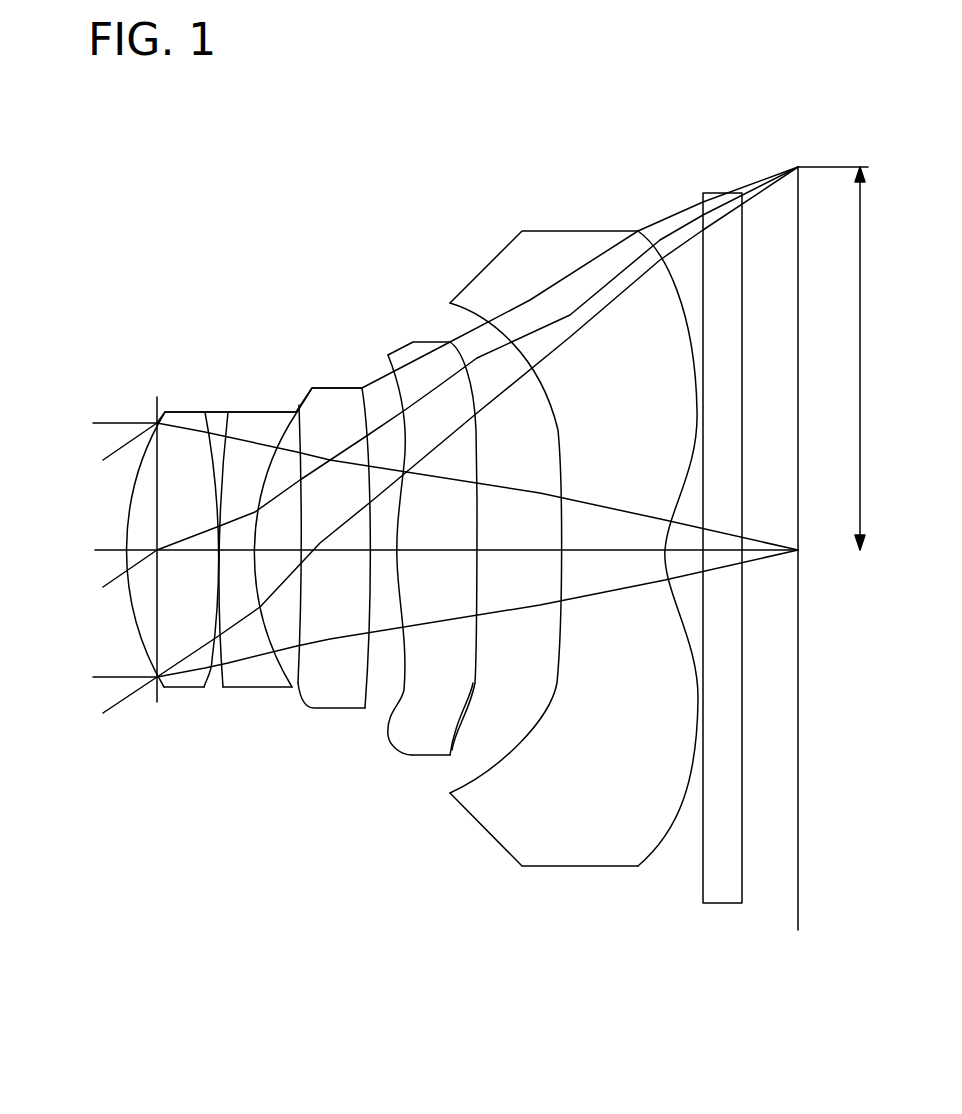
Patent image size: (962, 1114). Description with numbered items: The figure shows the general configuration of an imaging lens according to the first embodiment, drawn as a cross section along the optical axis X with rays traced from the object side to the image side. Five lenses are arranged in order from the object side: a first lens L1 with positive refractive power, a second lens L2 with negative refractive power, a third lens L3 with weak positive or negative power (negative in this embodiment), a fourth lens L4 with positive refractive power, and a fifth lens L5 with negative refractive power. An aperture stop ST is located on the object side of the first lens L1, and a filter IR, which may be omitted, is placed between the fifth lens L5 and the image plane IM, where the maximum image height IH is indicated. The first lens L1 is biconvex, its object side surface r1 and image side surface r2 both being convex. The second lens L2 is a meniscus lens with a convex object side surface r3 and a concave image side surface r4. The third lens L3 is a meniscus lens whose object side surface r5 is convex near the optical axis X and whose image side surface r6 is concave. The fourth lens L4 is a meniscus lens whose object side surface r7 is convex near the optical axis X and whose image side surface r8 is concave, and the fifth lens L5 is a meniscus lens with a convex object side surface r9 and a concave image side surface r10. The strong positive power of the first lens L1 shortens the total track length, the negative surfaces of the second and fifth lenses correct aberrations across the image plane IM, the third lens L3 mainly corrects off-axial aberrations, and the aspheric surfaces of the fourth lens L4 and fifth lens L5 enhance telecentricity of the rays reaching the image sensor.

The optical axis X is at (105, 545).
The aperture stop ST is at (153, 490).
The first lens L1 is at (137, 536).
The second lens L2 is at (252, 538).
The third lens L3 is at (336, 529).
The fourth lens L4 is at (430, 541).
The fifth lens L5 is at (574, 554).
The object side surface of the first lens r1 is at (147, 648).
The image side surface of the first lens r2 is at (212, 665).
The object side surface of the second lens r3 is at (220, 690).
The image side surface of the second lens r4 is at (288, 693).
The object side surface of the third lens r5 is at (298, 700).
The image side surface of the third lens r6 is at (364, 708).
The object side surface of the fourth lens r7 is at (392, 742).
The image side surface of the fourth lens r8 is at (450, 793).
The object side surface of the fifth lens r9 is at (538, 727).
The image side surface of the fifth lens r10 is at (680, 825).
The filter IR is at (715, 192).
The image plane IM is at (798, 847).
The maximum image height IH is at (833, 358).